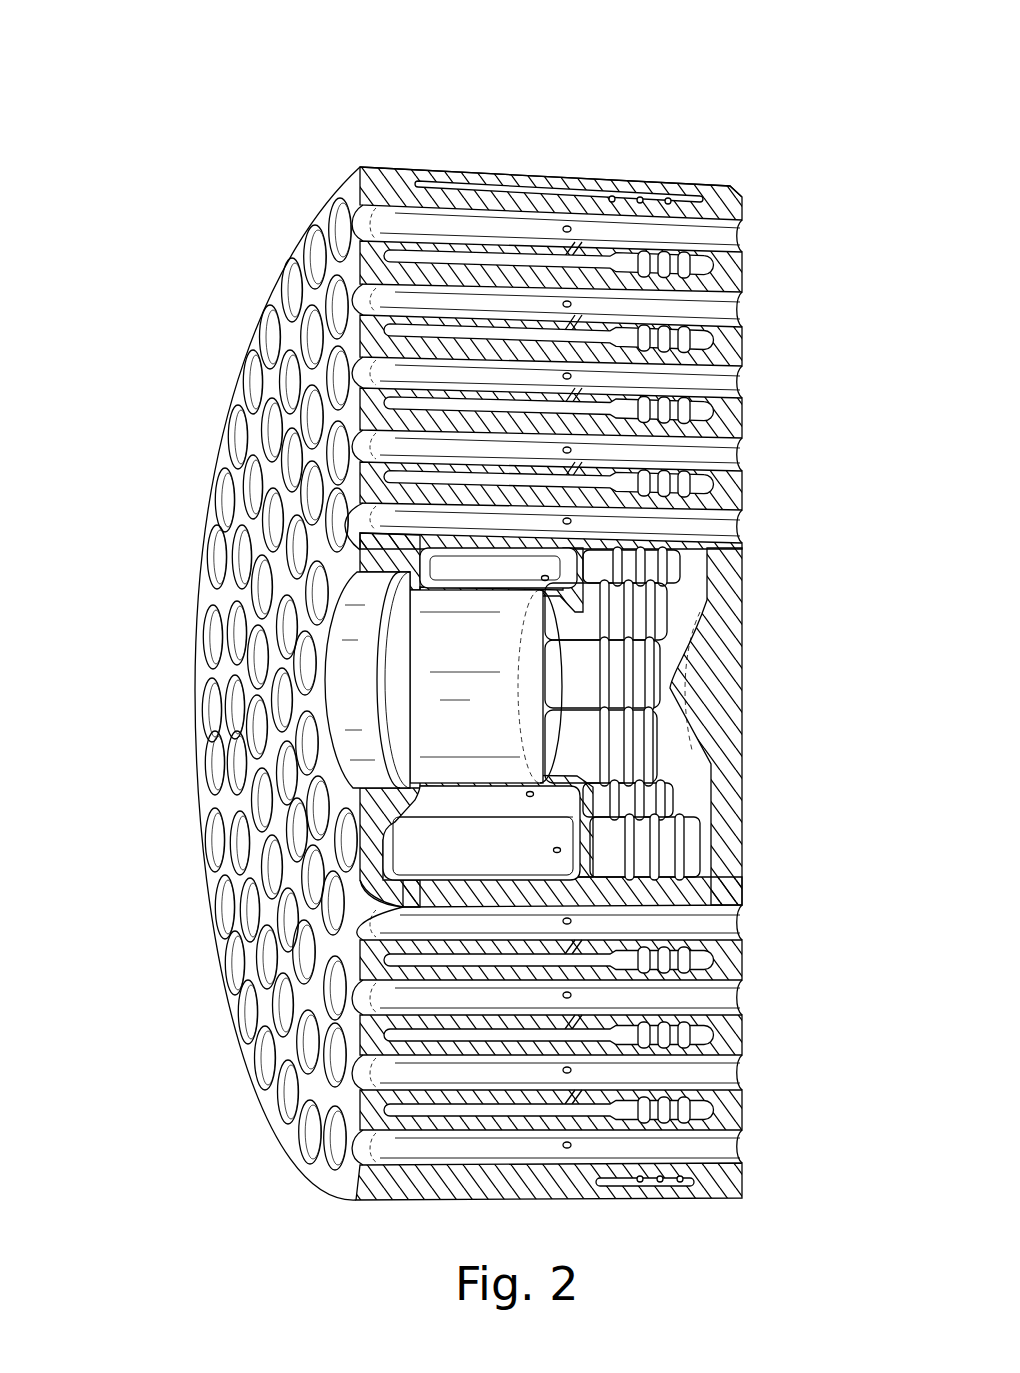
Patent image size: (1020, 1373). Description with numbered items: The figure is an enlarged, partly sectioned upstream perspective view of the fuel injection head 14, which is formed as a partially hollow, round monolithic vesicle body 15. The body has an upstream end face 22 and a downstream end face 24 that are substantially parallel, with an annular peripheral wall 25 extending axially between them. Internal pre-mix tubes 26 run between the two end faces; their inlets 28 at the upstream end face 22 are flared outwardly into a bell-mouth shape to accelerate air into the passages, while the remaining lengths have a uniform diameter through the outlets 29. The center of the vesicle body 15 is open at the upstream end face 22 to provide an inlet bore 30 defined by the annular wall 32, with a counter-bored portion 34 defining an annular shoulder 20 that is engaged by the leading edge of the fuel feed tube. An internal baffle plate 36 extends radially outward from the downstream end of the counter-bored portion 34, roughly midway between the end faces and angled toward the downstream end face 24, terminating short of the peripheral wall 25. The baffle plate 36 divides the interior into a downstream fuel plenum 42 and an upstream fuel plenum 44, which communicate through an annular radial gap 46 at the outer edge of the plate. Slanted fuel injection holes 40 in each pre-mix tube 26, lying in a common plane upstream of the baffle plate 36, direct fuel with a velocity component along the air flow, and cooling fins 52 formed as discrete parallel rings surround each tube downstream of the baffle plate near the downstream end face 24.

The fuel injection head 14 is at (398, 71).
The vesicle body 15 is at (299, 1167).
The upstream end face 22 is at (273, 292).
The annular peripheral wall 25 is at (492, 167).
The fuel injection holes 40 is at (580, 205).
The downstream end face 24 is at (747, 345).
The pre-mix tubes 26 is at (718, 387).
The outlets 29 is at (740, 928).
The inlets 28 is at (255, 907).
The upstream fuel plenum 44 is at (490, 1030).
The annular radial gap 46 is at (578, 1108).
The annular shoulder 20 is at (383, 650).
The downstream fuel plenum 42 is at (695, 595).
The baffle plate 36 is at (580, 886).
The cooling fins 52 is at (637, 743).
The counter-bored portion 34 is at (437, 625).
The annular wall 32 is at (347, 627).
The inlet bore 30 is at (350, 697).